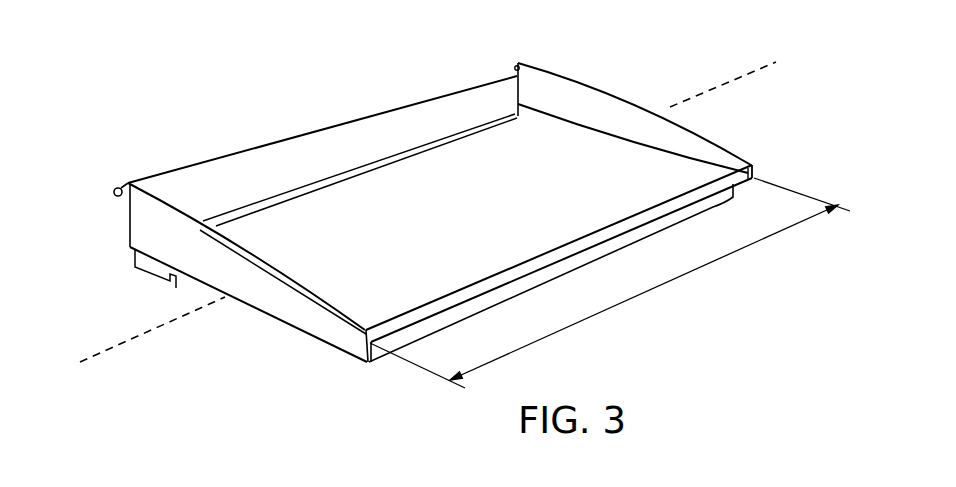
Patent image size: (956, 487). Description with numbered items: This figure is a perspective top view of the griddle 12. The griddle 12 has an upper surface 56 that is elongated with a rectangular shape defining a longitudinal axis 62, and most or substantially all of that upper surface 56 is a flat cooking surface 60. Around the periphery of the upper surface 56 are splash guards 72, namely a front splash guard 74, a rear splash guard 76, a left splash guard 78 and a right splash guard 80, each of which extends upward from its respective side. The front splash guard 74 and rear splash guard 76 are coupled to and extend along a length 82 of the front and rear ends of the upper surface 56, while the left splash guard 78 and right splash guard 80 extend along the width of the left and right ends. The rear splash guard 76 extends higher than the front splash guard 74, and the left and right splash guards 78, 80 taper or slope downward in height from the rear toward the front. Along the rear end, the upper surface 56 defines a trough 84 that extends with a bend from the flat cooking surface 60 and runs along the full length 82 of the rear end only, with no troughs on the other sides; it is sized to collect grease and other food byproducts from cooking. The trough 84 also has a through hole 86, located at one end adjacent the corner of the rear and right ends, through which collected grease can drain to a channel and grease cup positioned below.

The griddle 12 is at (172, 60).
The upper surface 56 is at (577, 150).
The flat cooking surface 60 is at (342, 287).
The longitudinal axis 62 is at (104, 350).
The splash guard 72 is at (170, 233).
The front splash guard 74 is at (731, 158).
The rear splash guard 76 is at (437, 110).
The left splash guard 78 is at (277, 282).
The right splash guard 80 is at (566, 87).
The length 82 is at (700, 268).
The trough 84 is at (387, 160).
The through hole 86 is at (504, 117).